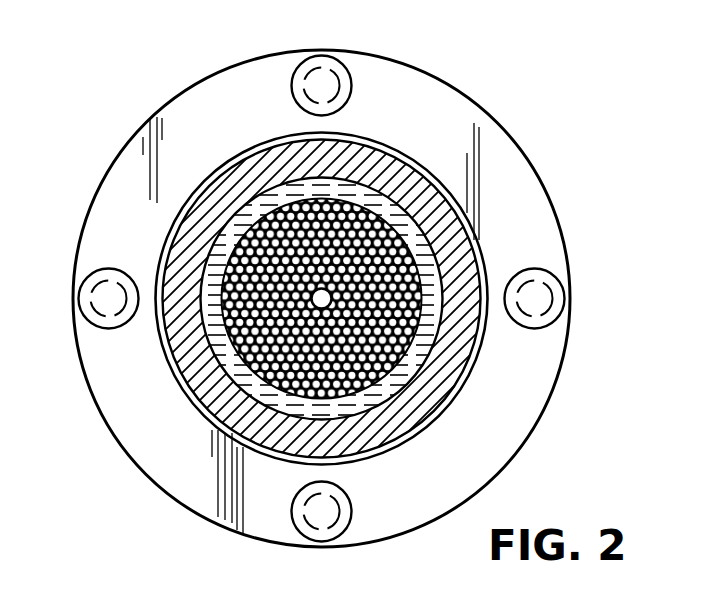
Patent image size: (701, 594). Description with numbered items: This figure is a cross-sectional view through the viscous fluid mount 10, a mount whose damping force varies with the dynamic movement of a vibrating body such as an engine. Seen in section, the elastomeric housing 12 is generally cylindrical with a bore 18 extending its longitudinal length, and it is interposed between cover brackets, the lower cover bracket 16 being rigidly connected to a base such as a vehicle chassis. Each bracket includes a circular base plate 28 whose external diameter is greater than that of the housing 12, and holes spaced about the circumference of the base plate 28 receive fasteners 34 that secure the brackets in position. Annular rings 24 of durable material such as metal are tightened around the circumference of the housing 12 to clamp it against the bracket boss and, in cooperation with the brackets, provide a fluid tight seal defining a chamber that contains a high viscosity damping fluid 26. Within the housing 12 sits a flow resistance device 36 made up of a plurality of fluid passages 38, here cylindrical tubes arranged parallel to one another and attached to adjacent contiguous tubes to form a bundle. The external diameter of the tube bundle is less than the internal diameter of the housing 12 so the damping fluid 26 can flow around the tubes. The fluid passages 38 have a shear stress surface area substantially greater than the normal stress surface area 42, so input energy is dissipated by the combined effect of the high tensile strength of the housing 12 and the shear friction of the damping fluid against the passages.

The viscous fluid mount 10 is at (512, 96).
The elastomeric housing 12 is at (427, 386).
The lower cover bracket 16 is at (483, 465).
The bore 18 is at (474, 227).
The annular rings 24 is at (373, 141).
The high viscosity damping fluid 26 is at (432, 352).
The circular base plate 28 is at (138, 430).
The fasteners 34 is at (328, 78).
The flow resistance device 36 is at (216, 303).
The fluid passages 38 is at (286, 196).
The normal stress surface area 42 is at (374, 208).